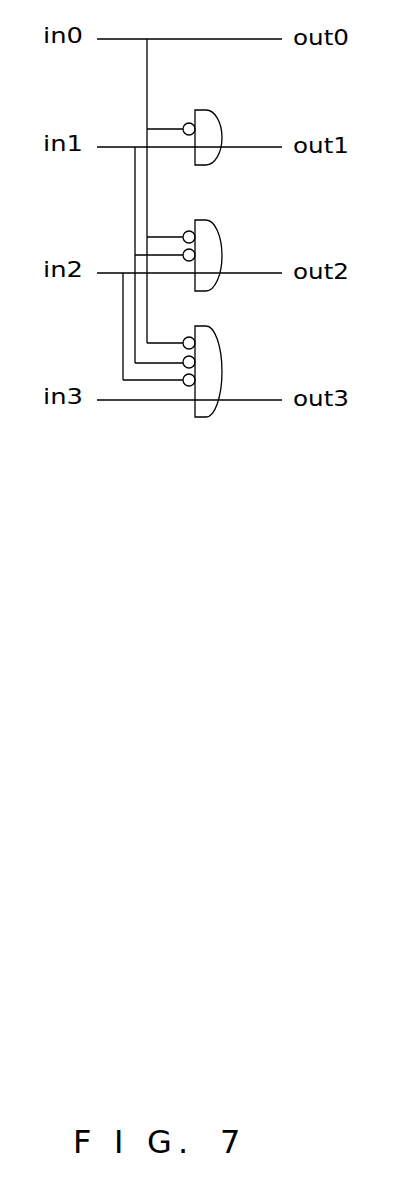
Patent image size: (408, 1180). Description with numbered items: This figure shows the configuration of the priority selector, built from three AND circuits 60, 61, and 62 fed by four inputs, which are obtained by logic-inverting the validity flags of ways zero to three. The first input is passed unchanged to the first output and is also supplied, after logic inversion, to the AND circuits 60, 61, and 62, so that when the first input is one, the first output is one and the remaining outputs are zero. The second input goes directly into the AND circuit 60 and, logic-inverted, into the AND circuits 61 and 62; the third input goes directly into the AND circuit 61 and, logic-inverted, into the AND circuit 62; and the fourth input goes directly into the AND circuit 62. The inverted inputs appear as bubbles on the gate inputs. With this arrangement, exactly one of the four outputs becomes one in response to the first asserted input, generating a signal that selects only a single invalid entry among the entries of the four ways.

The AND circuit 60 is at (219, 121).
The AND circuit 61 is at (219, 236).
The AND circuit 62 is at (221, 350).